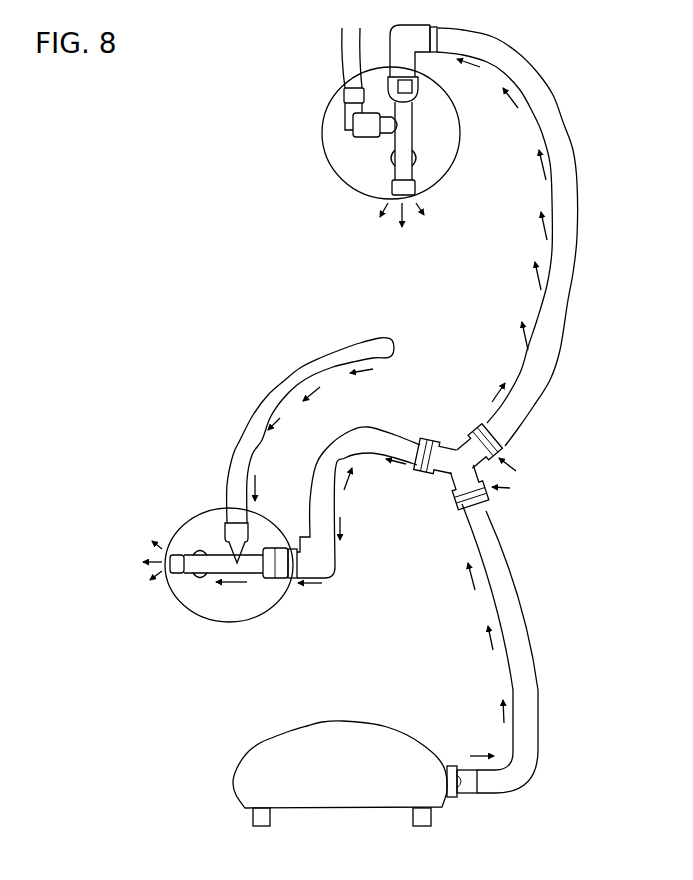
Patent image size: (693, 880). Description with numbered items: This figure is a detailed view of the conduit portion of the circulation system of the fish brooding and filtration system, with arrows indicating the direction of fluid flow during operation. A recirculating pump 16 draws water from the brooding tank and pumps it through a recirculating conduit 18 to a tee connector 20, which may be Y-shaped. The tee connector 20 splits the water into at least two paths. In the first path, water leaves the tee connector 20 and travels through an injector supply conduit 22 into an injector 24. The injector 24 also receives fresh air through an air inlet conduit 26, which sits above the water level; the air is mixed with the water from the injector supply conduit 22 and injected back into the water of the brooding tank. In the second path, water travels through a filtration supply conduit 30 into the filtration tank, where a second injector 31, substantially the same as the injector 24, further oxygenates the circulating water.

The recirculating pump 16 is at (307, 724).
The recirculating conduit 18 is at (537, 683).
The tee connector 20 is at (455, 470).
The injector supply conduit 22 is at (360, 440).
The injector 24 is at (184, 518).
The air inlet conduit 26 is at (258, 392).
The filtration supply conduit 30 is at (580, 237).
The second injector 31 is at (321, 123).